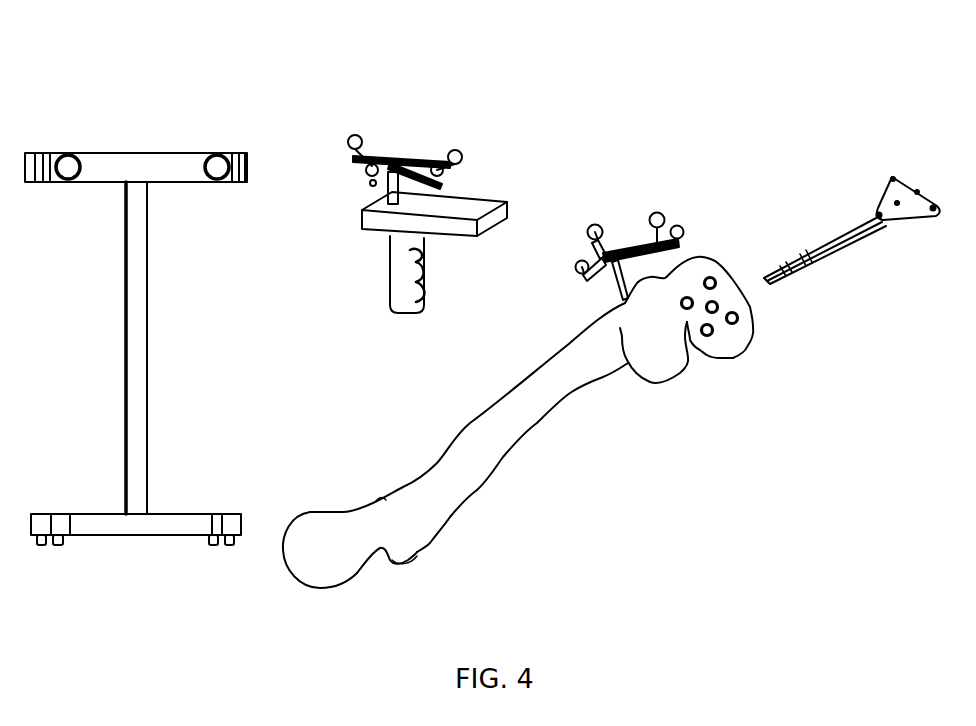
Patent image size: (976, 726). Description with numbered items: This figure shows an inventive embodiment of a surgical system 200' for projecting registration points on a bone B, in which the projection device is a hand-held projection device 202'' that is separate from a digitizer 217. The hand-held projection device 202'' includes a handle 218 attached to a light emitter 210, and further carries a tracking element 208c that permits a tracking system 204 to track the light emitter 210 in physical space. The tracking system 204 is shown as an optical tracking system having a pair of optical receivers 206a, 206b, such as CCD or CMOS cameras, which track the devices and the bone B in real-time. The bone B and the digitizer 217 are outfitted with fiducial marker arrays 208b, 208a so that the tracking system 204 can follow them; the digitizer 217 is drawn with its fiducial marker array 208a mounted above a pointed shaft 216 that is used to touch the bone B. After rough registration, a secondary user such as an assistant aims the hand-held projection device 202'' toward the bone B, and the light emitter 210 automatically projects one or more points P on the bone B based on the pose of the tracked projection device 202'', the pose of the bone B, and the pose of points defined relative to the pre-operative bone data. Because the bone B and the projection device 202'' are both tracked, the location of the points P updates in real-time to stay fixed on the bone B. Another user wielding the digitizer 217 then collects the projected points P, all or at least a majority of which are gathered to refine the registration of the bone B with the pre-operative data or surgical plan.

The surgical system 200' is at (62, 54).
The tracking system 204 is at (258, 132).
The optical receiver 206a is at (66, 180).
The optical receiver 206b is at (214, 180).
The hand-held projection device 202'' is at (376, 233).
The tracking element 208c is at (418, 157).
The light emitter 210 is at (468, 234).
The handle 218 is at (392, 300).
The fiducial marker array 208a is at (887, 176).
The pointer shaft 216 is at (773, 282).
The digitizer 217 is at (822, 201).
The fiducial marker array 208b is at (627, 246).
The bone B is at (520, 447).
The points P is at (710, 336).